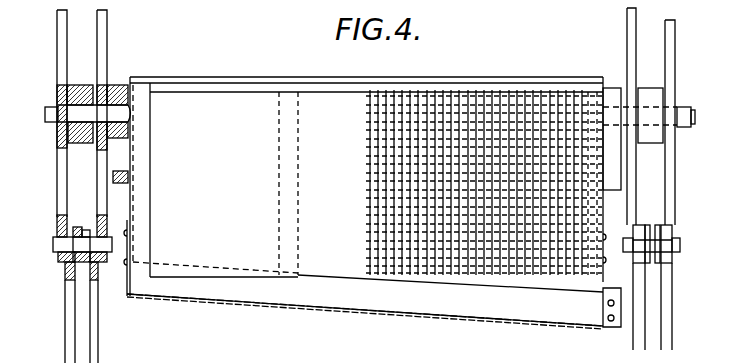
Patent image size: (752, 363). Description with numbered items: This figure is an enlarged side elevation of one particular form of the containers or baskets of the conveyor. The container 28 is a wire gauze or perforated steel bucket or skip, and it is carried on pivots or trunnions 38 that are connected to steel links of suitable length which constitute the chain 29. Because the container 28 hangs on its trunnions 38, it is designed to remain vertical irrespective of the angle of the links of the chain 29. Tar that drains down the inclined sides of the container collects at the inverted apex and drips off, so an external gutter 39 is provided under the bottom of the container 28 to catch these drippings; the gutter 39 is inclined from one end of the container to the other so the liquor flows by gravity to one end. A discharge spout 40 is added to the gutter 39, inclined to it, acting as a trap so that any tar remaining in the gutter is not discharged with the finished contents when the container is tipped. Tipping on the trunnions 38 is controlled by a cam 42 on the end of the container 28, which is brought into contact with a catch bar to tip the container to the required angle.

The container 28 is at (460, 100).
The chain 29 is at (57, 190).
The pivots or trunnions 38 is at (45, 114).
The external gutter 39 is at (347, 296).
The discharge spout 40 is at (612, 327).
The cam 42 is at (113, 178).